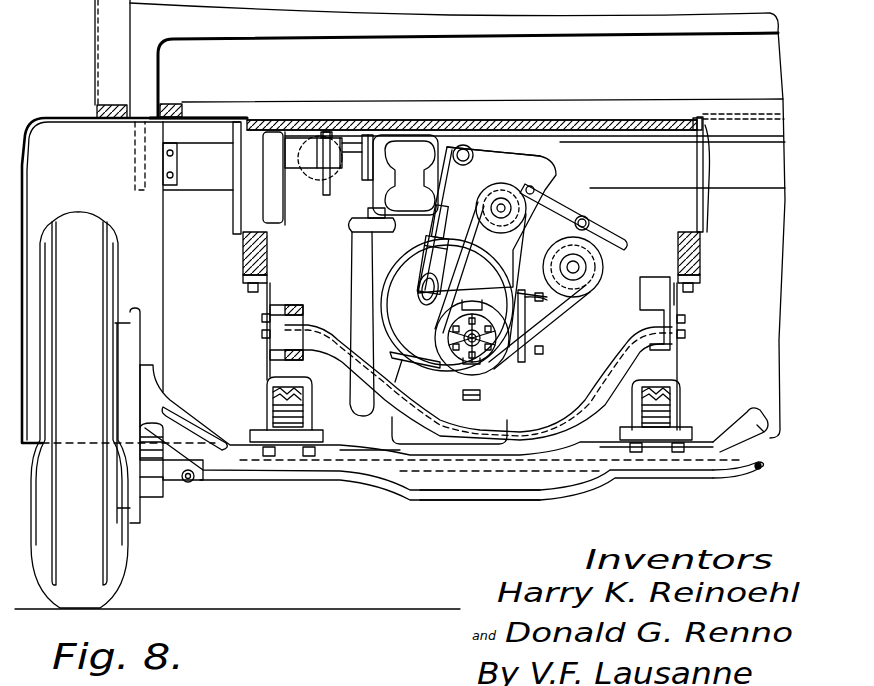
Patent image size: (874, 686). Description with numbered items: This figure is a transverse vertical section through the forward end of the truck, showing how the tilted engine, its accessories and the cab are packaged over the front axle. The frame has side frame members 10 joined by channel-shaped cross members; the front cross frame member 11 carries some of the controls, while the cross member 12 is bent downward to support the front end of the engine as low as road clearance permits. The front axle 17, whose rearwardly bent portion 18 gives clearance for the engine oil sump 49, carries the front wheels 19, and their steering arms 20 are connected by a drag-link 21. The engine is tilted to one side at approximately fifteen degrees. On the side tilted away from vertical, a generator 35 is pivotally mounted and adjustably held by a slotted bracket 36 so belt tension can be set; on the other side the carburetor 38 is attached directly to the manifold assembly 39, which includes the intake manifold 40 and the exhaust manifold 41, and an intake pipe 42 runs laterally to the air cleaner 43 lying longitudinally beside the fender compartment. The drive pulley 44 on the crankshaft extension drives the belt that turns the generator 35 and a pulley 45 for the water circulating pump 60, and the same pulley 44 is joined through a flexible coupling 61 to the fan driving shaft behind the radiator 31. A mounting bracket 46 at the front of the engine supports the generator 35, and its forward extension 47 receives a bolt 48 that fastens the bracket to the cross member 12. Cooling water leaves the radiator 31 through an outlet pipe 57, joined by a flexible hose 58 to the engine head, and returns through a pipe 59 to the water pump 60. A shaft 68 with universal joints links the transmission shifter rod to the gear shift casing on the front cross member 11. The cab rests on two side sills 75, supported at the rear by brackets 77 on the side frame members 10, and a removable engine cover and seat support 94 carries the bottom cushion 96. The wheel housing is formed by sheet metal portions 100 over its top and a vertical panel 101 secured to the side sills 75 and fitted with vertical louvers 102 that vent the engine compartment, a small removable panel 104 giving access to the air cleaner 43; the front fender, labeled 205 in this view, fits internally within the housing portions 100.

The side frame member 10 is at (670, 358).
The front cross frame member 11 is at (270, 406).
The cross member 12 is at (270, 328).
The front axle 17 is at (290, 482).
The rearwardly bent portion 18 is at (495, 484).
The front wheel 19 is at (118, 535).
The steering arm 20 is at (152, 486).
The drag-link 21 is at (752, 468).
The radiator 31 is at (497, 163).
The generator 35 is at (613, 266).
The slotted bracket 36 is at (570, 207).
The carburetor 38 is at (355, 143).
The manifold assembly 39 is at (373, 180).
The intake manifold 40 is at (415, 158).
The exhaust manifold 41 is at (365, 256).
The intake pipe 42 is at (305, 140).
The air cleaner 43 is at (273, 202).
The drive pulley 44 is at (440, 334).
The pulley 45 is at (500, 162).
The mounting bracket 46 is at (533, 328).
The forward extension 47 is at (503, 397).
The bolt 48 is at (576, 418).
The oil sump 49 is at (423, 442).
The outlet pipe 57 is at (470, 148).
The flexible hose 58 is at (440, 248).
The pipe 59 is at (422, 272).
The water pump 60 is at (457, 218).
The flexible coupling 61 is at (437, 330).
The shaft 68 is at (540, 230).
The side sill 75 is at (242, 259).
The bracket 77 is at (267, 300).
The engine cover and seat support 94 is at (598, 119).
The bottom cushion 96 is at (302, 48).
The sheet metal housing portion 100 is at (127, 118).
The vertical panel 101 is at (238, 162).
The vertical louver 102 is at (707, 175).
The small panel 104 is at (233, 208).
The fender 205 is at (52, 118).